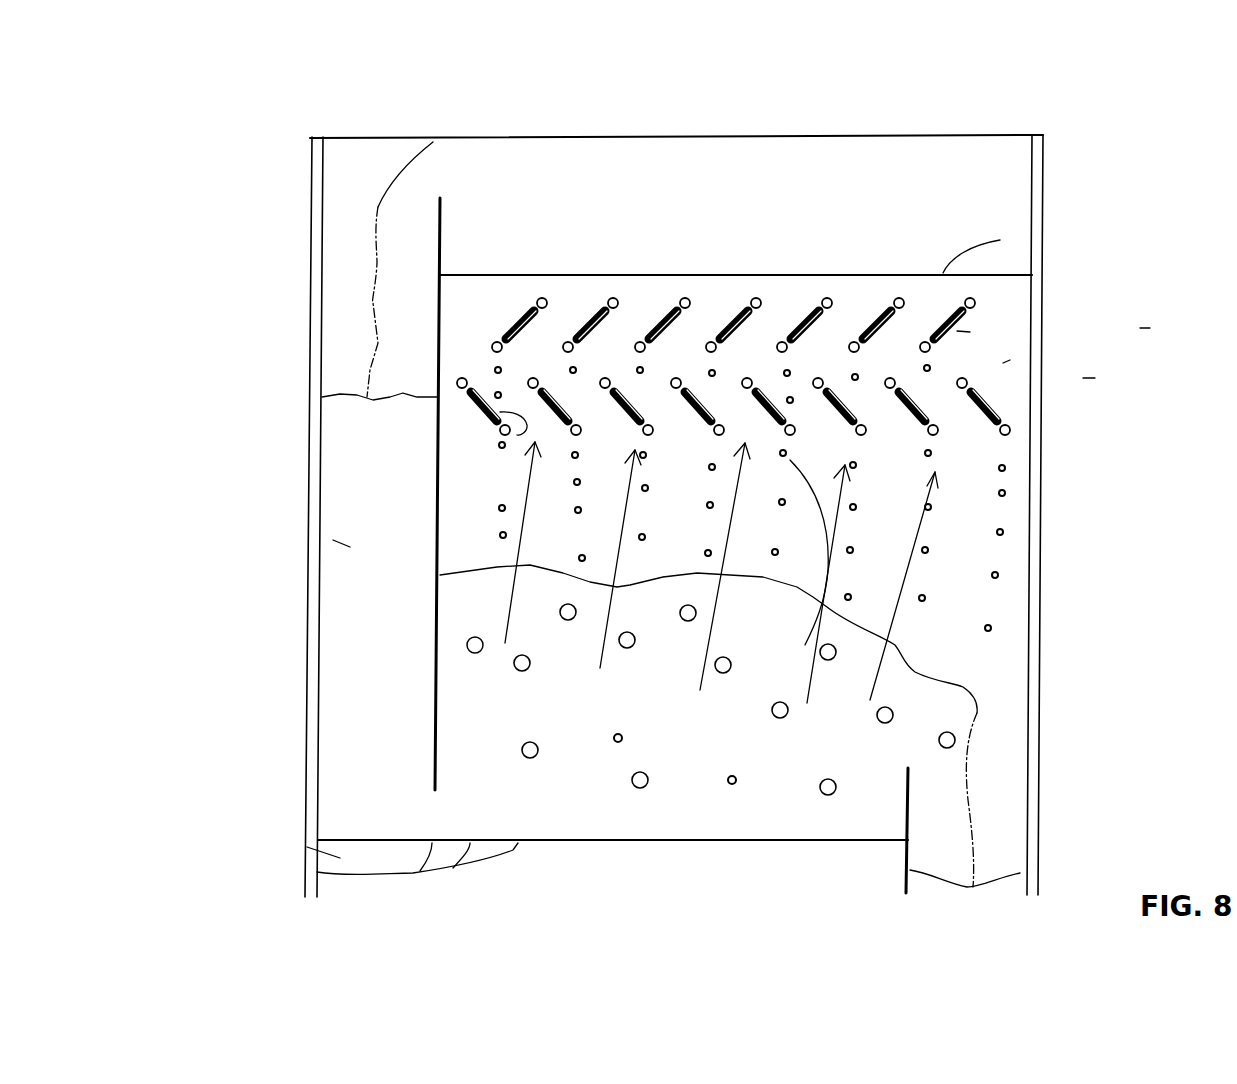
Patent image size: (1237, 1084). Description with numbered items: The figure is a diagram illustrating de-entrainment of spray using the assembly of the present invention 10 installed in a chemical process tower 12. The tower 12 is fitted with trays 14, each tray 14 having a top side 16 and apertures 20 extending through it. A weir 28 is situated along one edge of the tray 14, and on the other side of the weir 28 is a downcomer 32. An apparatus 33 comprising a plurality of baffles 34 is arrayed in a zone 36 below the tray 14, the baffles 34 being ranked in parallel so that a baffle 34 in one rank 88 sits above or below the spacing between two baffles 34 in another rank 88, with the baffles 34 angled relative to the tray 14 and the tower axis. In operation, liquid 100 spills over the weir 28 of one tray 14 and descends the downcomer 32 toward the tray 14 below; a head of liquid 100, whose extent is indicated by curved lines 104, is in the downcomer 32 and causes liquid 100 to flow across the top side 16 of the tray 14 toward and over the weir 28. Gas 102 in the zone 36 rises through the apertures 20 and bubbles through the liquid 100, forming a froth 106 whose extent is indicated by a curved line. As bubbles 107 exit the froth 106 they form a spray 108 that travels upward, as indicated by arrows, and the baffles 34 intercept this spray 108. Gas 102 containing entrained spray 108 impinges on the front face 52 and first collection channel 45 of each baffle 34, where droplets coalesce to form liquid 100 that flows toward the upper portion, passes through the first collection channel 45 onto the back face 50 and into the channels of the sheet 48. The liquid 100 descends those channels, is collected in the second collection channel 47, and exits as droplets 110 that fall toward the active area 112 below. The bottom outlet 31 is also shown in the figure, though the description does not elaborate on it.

The embodiment of the present invention 10 is at (1170, 127).
The chemical process tower 12 is at (218, 222).
The tray 14 is at (905, 275).
The top side 16 is at (835, 275).
The apertures 20 is at (987, 273).
The weir 28 is at (437, 220).
The bottom outlet 31 is at (307, 847).
The downcomer 32 is at (333, 540).
The apparatus 33 is at (1083, 378).
The baffles 34 is at (733, 322).
The zone 36 is at (1003, 363).
The first collection channel 45 is at (466, 378).
The second collection channel 47 is at (527, 437).
The sheet 48 is at (500, 412).
The back face 50 is at (970, 332).
The front face 52 is at (957, 331).
The rank 88 is at (1140, 328).
The liquid 100 is at (513, 322).
The gas 102 is at (963, 430).
The curved lines 104 is at (358, 397).
The froth 106 is at (903, 640).
The bubbles 107 is at (467, 643).
The spray 108 is at (907, 577).
The droplets 110 is at (1003, 532).
The active area 112 is at (827, 528).